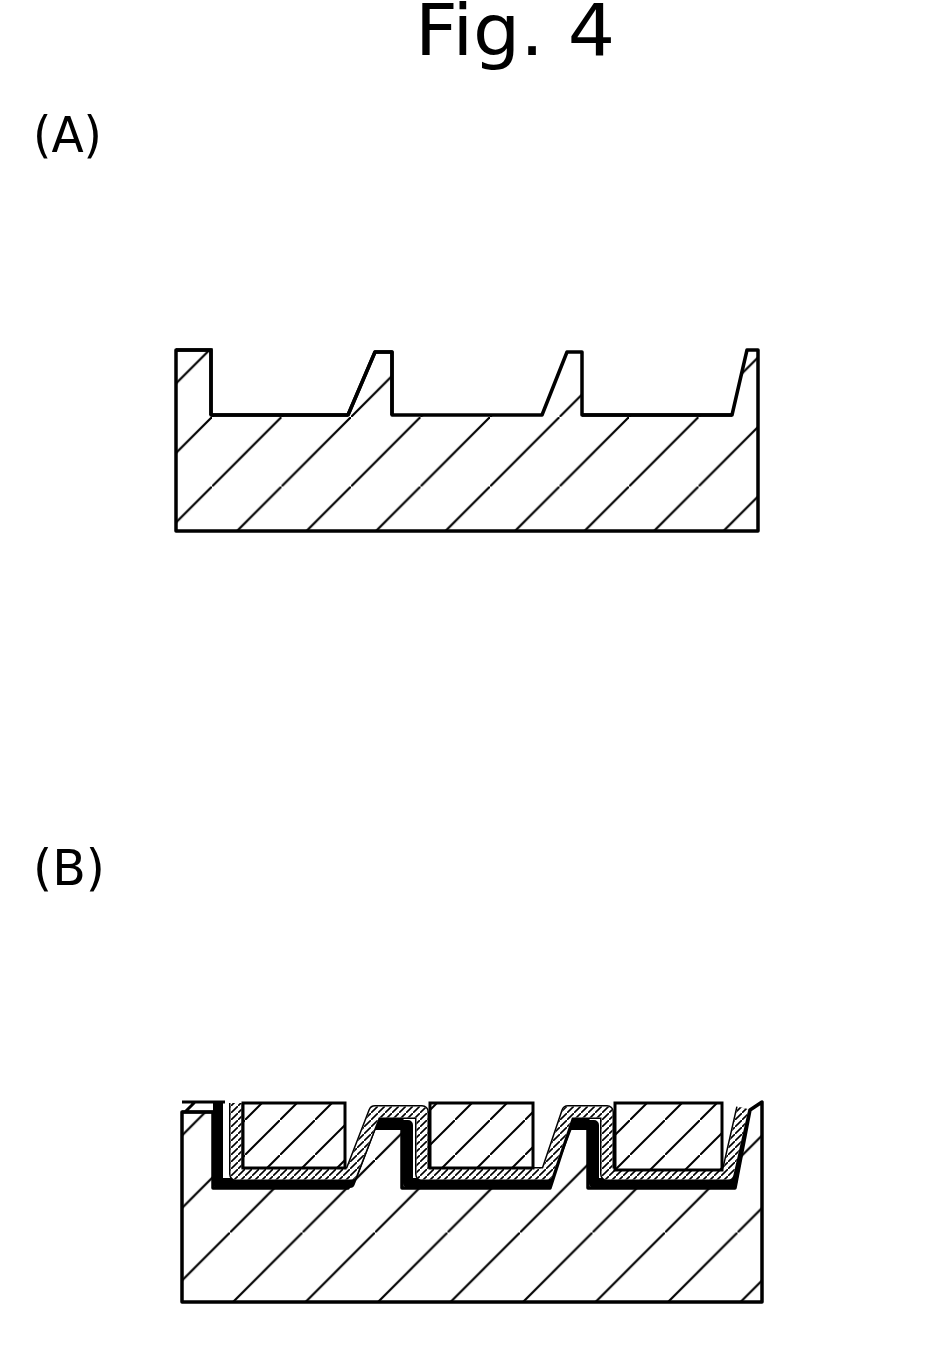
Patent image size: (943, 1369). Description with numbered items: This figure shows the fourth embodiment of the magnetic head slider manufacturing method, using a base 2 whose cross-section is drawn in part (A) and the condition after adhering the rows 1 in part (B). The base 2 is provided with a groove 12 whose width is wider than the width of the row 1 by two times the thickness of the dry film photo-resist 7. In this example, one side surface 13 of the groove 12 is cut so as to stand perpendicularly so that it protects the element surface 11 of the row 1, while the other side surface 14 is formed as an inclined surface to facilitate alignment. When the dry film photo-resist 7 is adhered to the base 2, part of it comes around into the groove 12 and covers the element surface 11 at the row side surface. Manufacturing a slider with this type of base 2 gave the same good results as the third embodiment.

The row 1 is at (298, 1125).
The base 2 is at (760, 413).
The dry film photo-resist 7 is at (392, 1110).
The element surface 11 is at (610, 1108).
The groove 12 is at (272, 390).
The one side surface 13 is at (205, 368).
The other side surface 14 is at (360, 372).